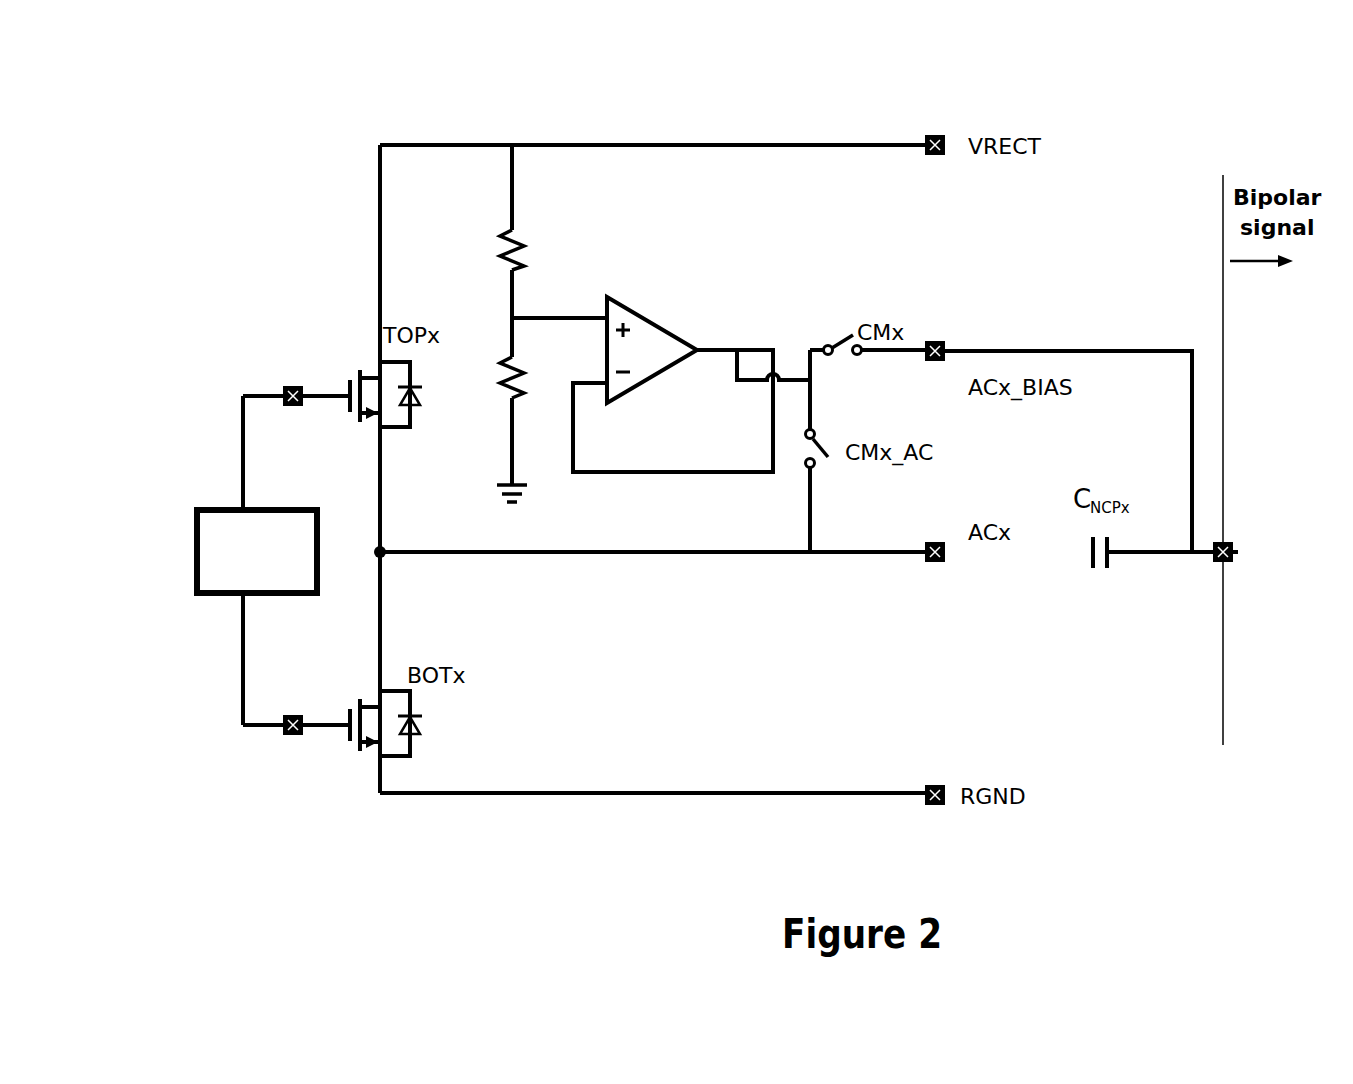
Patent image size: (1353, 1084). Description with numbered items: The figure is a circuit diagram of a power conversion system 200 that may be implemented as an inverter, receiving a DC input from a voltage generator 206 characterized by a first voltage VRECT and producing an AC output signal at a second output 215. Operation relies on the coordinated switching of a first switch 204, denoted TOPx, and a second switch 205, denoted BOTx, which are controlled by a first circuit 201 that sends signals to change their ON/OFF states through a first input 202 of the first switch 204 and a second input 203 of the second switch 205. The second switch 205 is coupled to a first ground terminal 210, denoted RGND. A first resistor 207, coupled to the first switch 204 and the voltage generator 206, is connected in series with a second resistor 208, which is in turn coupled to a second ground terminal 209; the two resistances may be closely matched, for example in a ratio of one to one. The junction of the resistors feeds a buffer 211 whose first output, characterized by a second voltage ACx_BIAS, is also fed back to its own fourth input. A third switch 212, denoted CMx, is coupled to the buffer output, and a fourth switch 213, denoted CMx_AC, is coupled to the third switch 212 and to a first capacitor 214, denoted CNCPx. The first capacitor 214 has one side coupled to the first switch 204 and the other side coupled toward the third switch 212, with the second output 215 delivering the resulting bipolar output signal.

The system 200 is at (1157, 130).
The first circuit 201 is at (257, 551).
The first input 202 is at (293, 386).
The second input 203 is at (283, 733).
The first switch 204 is at (370, 377).
The second switch 205 is at (370, 703).
The voltage generator 206 is at (935, 133).
The first resistor 207 is at (522, 238).
The second resistor 208 is at (500, 387).
The second ground terminal 209 is at (498, 485).
The first ground terminal 210 is at (935, 783).
The buffer 211 is at (620, 300).
The third switch 212 is at (833, 343).
The fourth switch 213 is at (826, 448).
The first capacitor 214 is at (1090, 562).
The second output 215 is at (1215, 562).